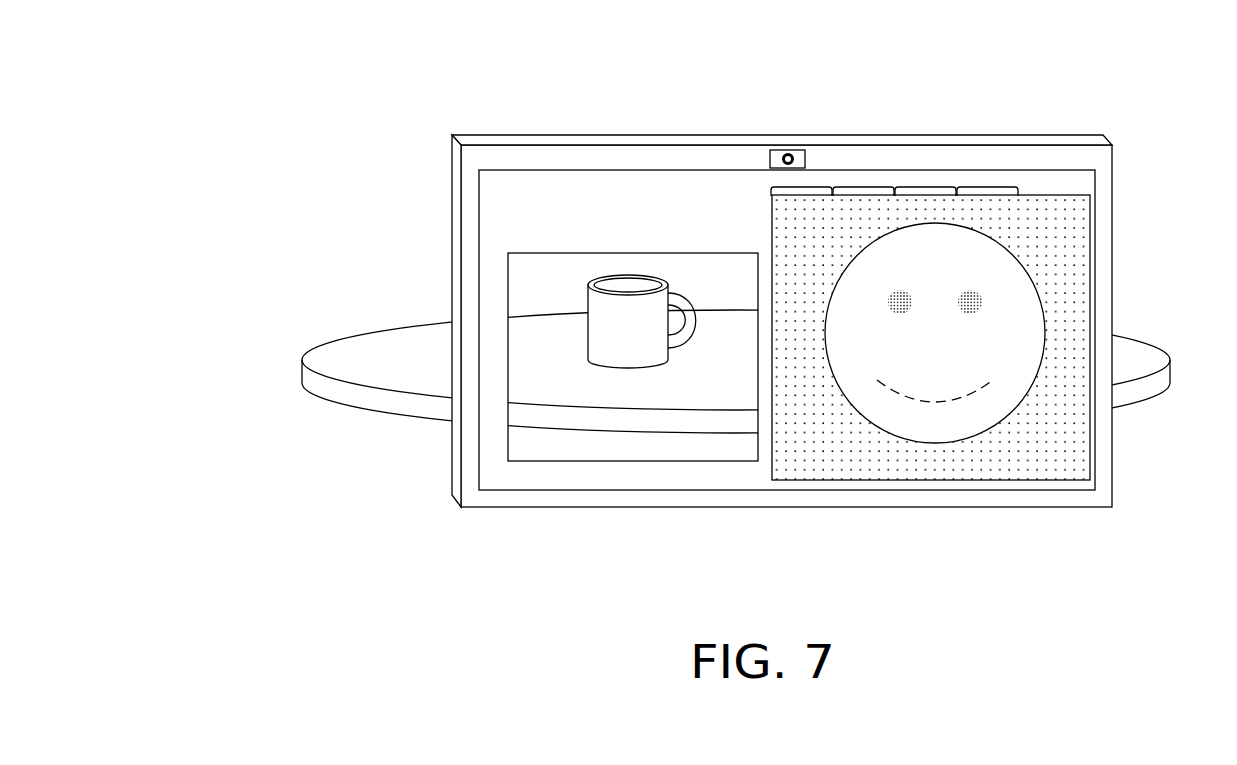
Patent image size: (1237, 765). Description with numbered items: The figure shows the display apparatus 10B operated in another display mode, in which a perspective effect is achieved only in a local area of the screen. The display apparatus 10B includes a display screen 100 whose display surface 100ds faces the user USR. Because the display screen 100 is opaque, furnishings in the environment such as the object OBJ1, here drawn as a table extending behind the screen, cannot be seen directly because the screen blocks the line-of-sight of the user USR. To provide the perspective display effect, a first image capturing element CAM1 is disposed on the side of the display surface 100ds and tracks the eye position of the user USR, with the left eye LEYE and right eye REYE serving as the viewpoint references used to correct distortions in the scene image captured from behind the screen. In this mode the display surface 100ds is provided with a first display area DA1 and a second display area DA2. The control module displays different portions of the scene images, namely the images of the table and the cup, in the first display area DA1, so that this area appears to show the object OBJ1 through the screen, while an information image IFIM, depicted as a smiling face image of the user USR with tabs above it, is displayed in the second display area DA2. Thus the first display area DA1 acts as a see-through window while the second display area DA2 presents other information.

The display apparatus 10B is at (758, 307).
The display screen 100 is at (505, 152).
The display surface 100ds is at (498, 273).
The first image capturing element CAM1 is at (777, 149).
The information image IFIM is at (905, 205).
The user USR is at (995, 323).
The left eye LEYE is at (892, 292).
The right eye REYE is at (974, 292).
The object OBJ1 is at (307, 383).
The first display area DA1 is at (736, 379).
The second display area DA2 is at (957, 324).